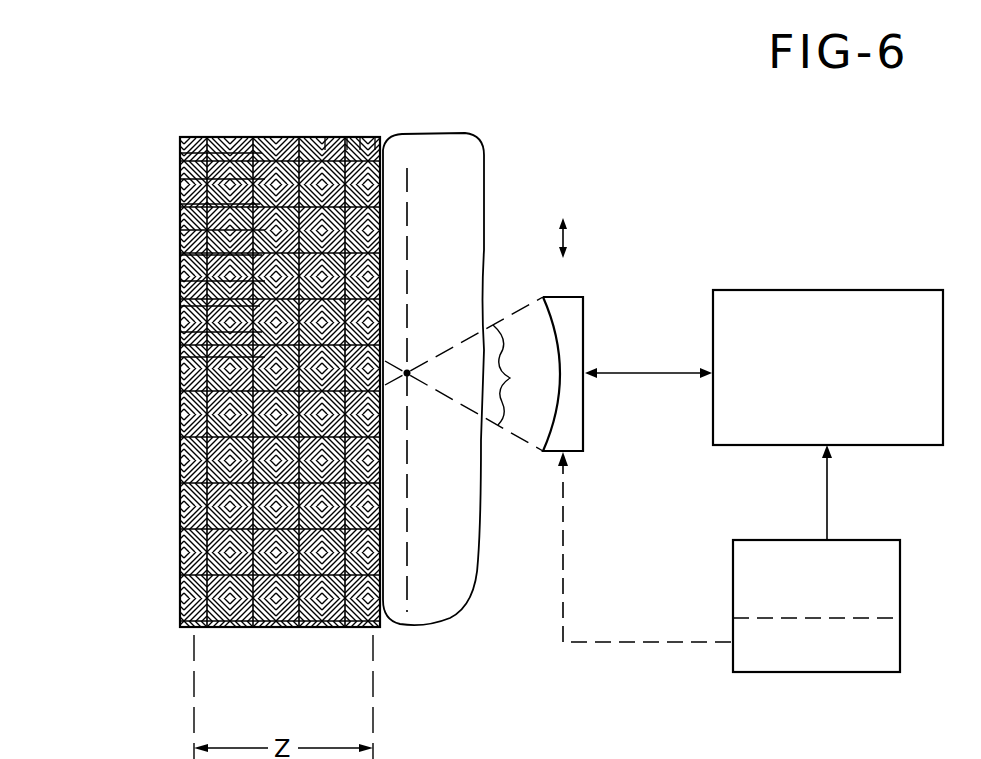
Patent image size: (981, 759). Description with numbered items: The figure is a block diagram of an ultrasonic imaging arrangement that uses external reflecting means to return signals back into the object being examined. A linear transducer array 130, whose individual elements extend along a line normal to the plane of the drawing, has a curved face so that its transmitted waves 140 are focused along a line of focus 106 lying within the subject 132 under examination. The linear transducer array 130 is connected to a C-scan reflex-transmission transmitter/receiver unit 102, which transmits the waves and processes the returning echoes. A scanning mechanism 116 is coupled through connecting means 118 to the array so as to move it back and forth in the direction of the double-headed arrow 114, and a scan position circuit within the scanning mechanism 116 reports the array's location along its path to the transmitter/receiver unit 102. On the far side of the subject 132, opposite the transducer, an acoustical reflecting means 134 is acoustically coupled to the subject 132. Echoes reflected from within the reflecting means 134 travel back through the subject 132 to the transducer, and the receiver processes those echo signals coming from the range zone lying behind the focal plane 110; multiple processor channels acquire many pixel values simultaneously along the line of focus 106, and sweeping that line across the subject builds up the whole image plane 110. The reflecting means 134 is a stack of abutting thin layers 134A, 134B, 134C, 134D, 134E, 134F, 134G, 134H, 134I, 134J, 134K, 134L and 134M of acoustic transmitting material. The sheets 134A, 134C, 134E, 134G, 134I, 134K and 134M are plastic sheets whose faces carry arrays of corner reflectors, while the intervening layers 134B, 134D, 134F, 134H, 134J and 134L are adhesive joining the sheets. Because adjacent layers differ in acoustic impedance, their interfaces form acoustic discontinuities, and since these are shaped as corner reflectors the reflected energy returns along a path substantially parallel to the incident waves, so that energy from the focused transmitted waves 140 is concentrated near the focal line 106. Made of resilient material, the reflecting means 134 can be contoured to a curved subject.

The C-scan reflex-transmission transmitter/receiver unit 102 is at (905, 290).
The line of focus 106 is at (408, 372).
The focal plane 110 is at (412, 197).
The double-headed arrow 114 is at (567, 245).
The scanning mechanism 116 is at (900, 540).
The connecting means 118 is at (572, 641).
The linear transducer array 130 is at (583, 298).
The subject 132 is at (445, 133).
The acoustical reflecting means 134 is at (178, 132).
The corner reflector sheet layer 134A is at (375, 137).
The adhesive layer 134B is at (360, 137).
The corner reflector sheet layer 134C is at (347, 137).
The adhesive layer 134D is at (325, 137).
The corner reflector sheet layer 134E is at (180, 153).
The adhesive layer 134F is at (180, 179).
The corner reflector sheet layer 134G is at (180, 204).
The adhesive layer 134H is at (180, 230).
The corner reflector sheet layer 134I is at (180, 255).
The adhesive layer 134J is at (180, 281).
The corner reflector sheet layer 134K is at (180, 306).
The adhesive layer 134L is at (180, 332).
The corner reflector sheet layer 134M is at (180, 357).
The transmitted waves 140 is at (525, 375).